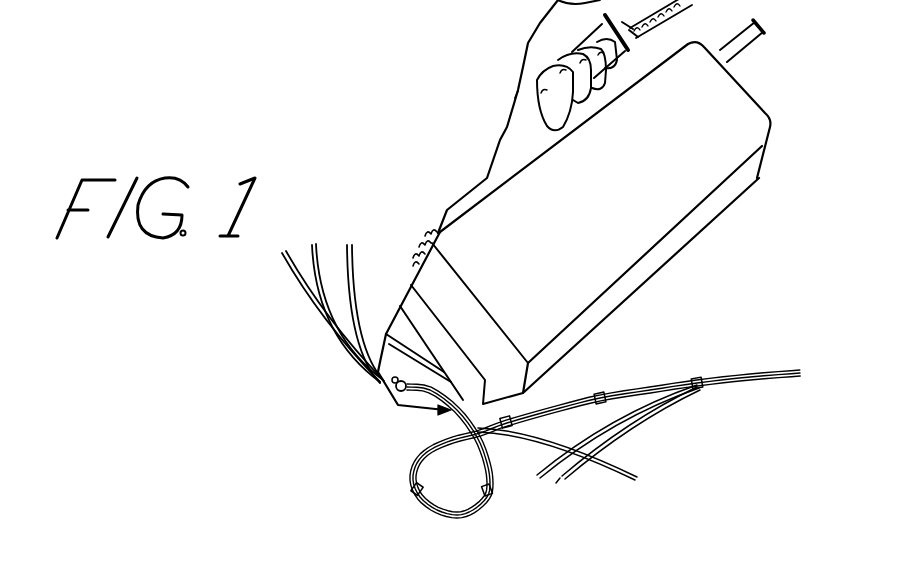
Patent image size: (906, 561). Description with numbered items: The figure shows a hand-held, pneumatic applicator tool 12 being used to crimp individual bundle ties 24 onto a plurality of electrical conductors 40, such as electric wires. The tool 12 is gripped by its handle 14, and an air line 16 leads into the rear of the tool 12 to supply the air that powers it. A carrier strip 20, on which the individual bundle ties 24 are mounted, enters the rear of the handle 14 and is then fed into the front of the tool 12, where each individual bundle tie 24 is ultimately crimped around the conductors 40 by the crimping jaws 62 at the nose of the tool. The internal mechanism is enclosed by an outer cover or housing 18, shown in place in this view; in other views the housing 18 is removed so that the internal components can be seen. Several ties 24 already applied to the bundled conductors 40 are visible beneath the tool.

The hand-held applicator tool 12 is at (462, 97).
The handle 14 is at (513, 136).
The air line 16 is at (765, 38).
The outer cover or housing 18 is at (607, 242).
The carrier strip 20 is at (423, 228).
The bundle ties 24 is at (653, 20).
The electrical conductors 40 is at (777, 370).
The crimping jaws 62 is at (383, 383).